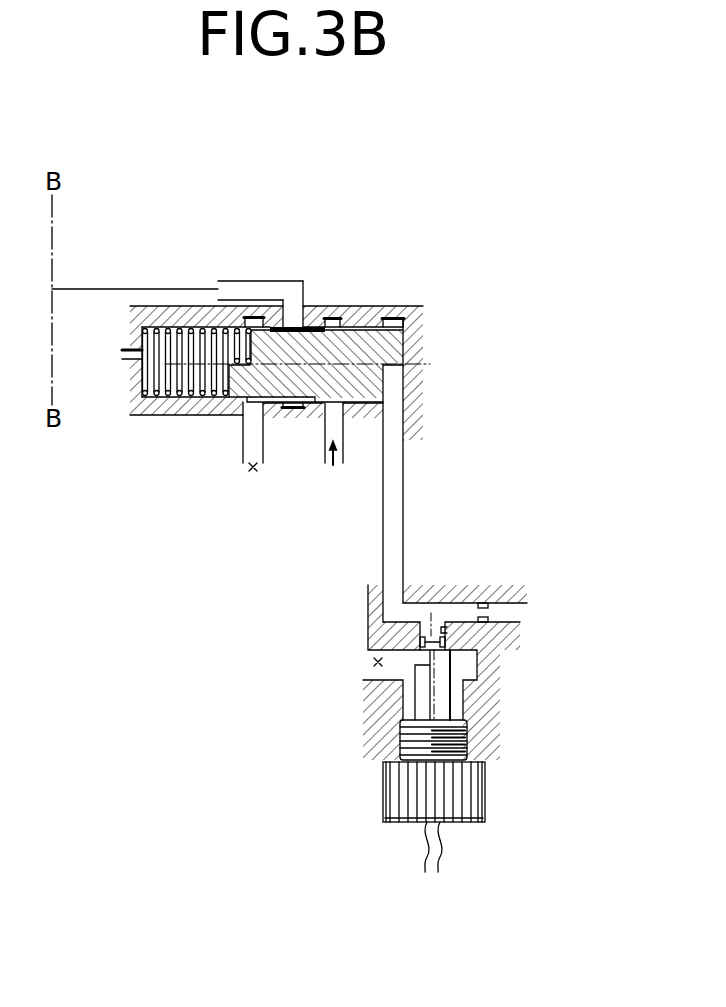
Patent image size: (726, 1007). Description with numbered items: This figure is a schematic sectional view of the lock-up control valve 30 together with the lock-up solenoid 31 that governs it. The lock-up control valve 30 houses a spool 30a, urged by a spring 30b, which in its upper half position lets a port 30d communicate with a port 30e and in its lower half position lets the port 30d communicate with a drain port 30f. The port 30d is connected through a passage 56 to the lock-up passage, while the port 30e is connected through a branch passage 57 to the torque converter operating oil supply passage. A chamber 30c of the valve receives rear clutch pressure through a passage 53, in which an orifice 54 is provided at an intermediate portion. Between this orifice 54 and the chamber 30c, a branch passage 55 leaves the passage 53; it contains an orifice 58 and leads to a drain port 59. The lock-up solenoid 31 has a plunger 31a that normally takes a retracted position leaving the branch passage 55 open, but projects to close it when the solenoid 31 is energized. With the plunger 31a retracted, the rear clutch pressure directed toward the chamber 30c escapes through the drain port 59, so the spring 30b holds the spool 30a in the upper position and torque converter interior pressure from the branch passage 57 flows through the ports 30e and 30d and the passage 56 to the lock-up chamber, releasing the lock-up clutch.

The lock-up control valve 30 is at (377, 302).
The spool 30a is at (203, 405).
The spring 30b is at (147, 382).
The chamber 30c is at (395, 379).
The port 30d is at (290, 318).
The port 30e is at (337, 410).
The drain port 30f is at (257, 407).
The lock-up solenoid 31 is at (390, 803).
The plunger 31a is at (453, 667).
The passage 53 is at (404, 528).
The orifice 54 is at (488, 600).
The branch passage 55 is at (447, 630).
The passage 56 is at (167, 288).
The branch passage 57 is at (345, 443).
The orifice 58 is at (423, 642).
The drain port 59 is at (380, 684).